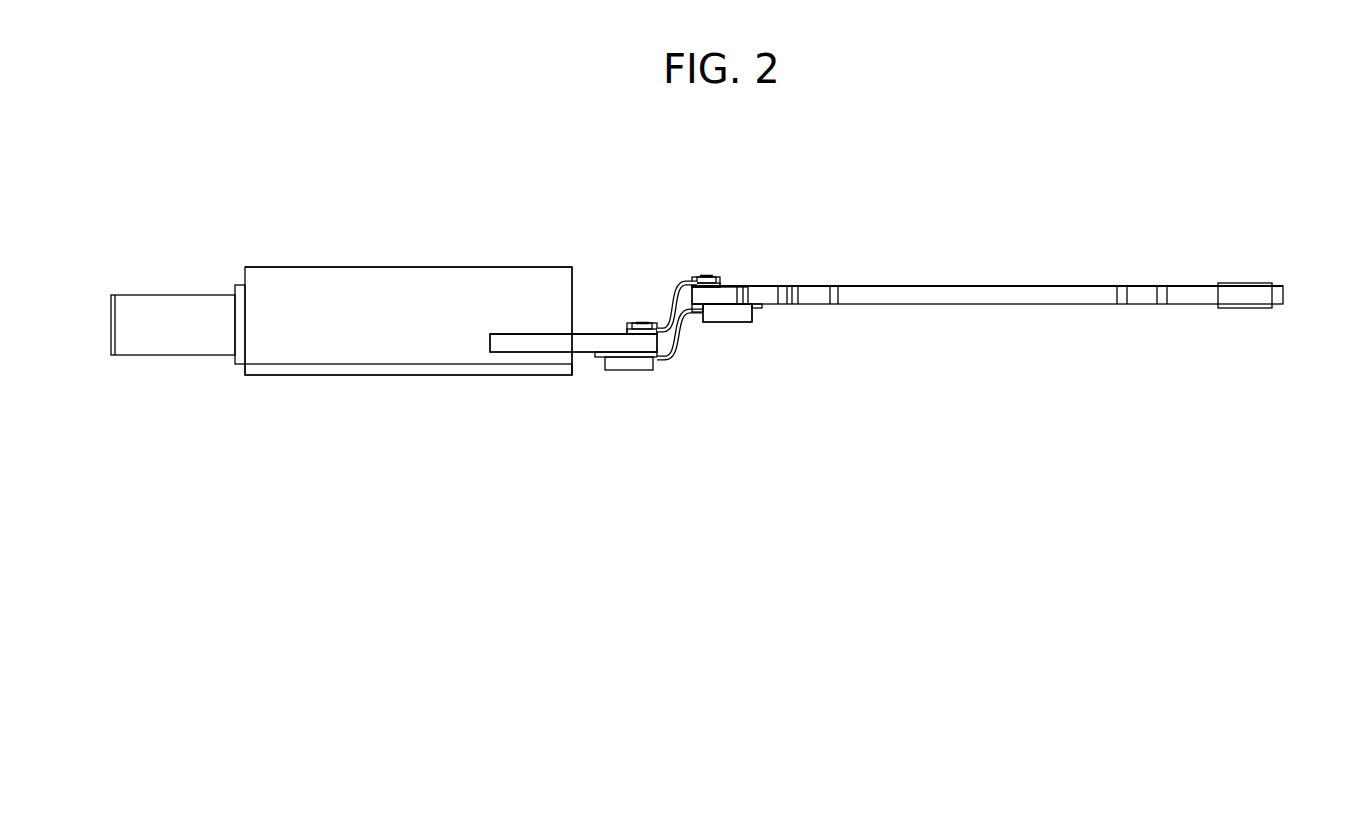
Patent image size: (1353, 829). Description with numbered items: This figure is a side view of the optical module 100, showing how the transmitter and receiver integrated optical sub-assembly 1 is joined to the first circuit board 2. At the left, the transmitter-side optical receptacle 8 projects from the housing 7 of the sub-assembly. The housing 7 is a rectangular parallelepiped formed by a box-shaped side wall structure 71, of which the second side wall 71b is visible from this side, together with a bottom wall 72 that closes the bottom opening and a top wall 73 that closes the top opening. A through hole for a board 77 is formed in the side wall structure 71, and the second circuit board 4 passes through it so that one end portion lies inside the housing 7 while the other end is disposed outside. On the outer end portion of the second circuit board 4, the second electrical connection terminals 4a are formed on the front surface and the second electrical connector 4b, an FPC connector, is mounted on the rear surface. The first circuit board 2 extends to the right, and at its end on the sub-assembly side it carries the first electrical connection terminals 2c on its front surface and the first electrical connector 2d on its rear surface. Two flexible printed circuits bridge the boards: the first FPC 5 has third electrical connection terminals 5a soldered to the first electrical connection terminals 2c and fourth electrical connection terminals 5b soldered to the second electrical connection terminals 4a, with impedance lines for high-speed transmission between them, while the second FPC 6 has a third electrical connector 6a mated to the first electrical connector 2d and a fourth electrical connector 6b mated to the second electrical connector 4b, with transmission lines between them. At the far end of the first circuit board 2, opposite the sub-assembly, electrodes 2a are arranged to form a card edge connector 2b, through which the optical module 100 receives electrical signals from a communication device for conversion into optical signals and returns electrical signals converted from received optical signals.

The optical module 100 is at (278, 182).
The transmitter and receiver integrated optical sub-assembly 1 is at (250, 246).
The transmitter-side optical receptacle 8 is at (172, 295).
The housing 7 is at (248, 383).
The side wall structure 71 is at (303, 285).
The second side wall 71b is at (448, 282).
The bottom wall 72 is at (377, 376).
The top wall 73 is at (378, 267).
The through hole for a board 77 is at (528, 352).
The second circuit board 4 is at (600, 334).
The second electrical connection terminals 4a is at (630, 330).
The second electrical connector 4b is at (627, 362).
The first FPC 5 is at (676, 300).
The third electrical connection terminals 5a is at (706, 275).
The fourth electrical connection terminals 5b is at (645, 322).
The second FPC 6 is at (688, 345).
The third electrical connector 6a is at (706, 322).
The fourth electrical connector 6b is at (660, 372).
The first circuit board 2 is at (993, 286).
The electrodes 2a is at (1234, 283).
The card edge connector 2b is at (1282, 276).
The first electrical connection terminals 2c is at (724, 286).
The first electrical connector 2d is at (747, 322).